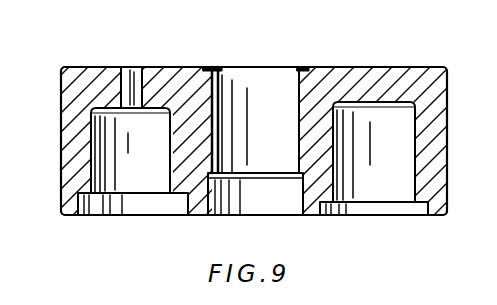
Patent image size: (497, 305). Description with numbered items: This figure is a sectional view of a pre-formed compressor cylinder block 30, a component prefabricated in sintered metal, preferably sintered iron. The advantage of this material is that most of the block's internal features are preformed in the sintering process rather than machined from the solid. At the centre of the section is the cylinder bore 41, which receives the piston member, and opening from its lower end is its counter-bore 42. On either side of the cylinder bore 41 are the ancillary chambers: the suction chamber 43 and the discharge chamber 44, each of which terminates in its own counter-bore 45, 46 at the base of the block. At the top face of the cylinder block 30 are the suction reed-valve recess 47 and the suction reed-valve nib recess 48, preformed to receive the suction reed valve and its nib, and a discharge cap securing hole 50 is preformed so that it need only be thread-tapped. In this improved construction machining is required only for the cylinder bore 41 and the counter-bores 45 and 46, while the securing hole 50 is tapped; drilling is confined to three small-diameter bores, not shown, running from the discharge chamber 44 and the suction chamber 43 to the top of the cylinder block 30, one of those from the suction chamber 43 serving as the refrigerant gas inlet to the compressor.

The cylinder block 30 is at (408, 80).
The cylinder bore 41 is at (272, 76).
The counter-bore 42 is at (236, 200).
The suction chamber 43 is at (390, 130).
The discharge chamber 44 is at (108, 133).
The counter-bore 45 is at (387, 213).
The counter-bore 46 is at (102, 205).
The suction reed-valve recess 47 is at (197, 66).
The suction reed-valve nib recess 48 is at (304, 66).
The discharge cap securing hole 50 is at (130, 68).